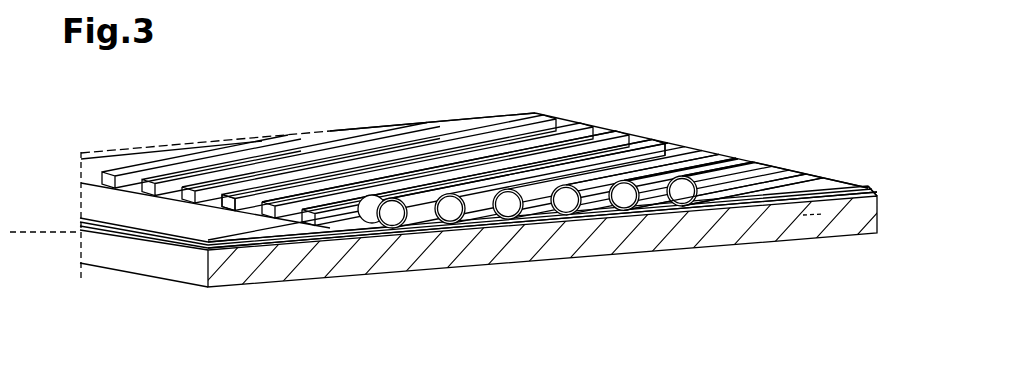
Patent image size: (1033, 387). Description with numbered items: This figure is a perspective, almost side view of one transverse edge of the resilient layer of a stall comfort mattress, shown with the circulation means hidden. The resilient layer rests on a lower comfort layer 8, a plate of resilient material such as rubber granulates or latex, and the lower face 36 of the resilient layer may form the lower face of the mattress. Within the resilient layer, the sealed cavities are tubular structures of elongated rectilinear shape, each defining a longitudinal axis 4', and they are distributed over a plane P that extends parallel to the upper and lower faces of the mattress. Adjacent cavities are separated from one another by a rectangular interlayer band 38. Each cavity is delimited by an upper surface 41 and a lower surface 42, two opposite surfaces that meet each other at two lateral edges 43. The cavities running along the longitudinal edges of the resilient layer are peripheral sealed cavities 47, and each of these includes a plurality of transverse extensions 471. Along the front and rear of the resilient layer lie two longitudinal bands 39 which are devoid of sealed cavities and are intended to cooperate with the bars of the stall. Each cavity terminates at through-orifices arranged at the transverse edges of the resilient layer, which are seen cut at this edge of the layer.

The lower comfort layer 8 is at (335, 270).
The lower face of resilient layer 36 is at (678, 215).
The interlayer band 38 is at (418, 208).
The longitudinal band 39 is at (100, 208).
The longitudinal axis 4' is at (792, 260).
The upper surface 41 is at (627, 172).
The lower surface 42 is at (642, 213).
The lateral edge 43 is at (606, 192).
The peripheral sealed cavity 47 is at (268, 165).
The transverse extension 471 is at (245, 197).
The plane P is at (44, 267).